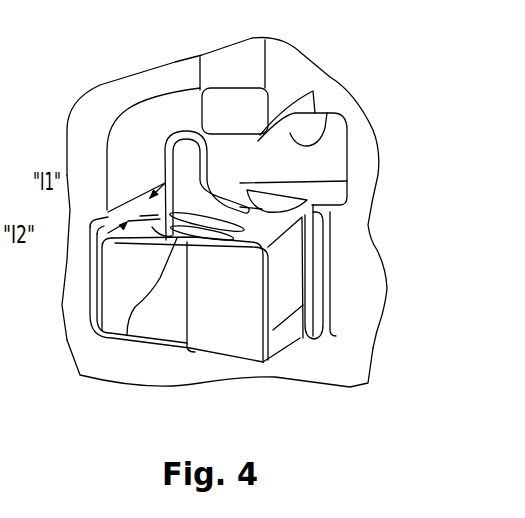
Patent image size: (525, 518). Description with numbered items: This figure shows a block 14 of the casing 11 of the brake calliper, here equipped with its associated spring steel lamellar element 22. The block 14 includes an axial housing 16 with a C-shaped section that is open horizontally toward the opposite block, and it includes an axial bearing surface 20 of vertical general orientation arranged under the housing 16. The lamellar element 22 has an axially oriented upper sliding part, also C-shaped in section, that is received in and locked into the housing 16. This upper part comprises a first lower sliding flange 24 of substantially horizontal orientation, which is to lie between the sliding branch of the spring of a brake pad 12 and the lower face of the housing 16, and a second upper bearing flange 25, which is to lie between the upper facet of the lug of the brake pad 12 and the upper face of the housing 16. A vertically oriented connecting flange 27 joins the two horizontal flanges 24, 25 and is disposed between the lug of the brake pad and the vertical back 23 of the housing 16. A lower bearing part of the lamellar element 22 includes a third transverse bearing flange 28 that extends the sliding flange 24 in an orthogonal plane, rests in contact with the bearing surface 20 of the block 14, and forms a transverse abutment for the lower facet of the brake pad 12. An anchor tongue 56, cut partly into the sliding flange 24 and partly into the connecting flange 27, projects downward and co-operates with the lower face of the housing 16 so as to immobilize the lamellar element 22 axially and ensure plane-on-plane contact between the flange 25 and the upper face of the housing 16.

The casing 11 is at (342, 396).
The brake pad 12 is at (8, 103).
The block 14 is at (238, 245).
The axial housing 16 is at (112, 232).
The axial bearing surface 20 is at (292, 400).
The lamellar element 22 is at (187, 128).
The vertical back 23 is at (123, 147).
The first lower sliding flange 24 is at (252, 333).
The second upper bearing flange 25 is at (325, 128).
The connecting flange 27 is at (160, 168).
The third transverse bearing flange 28 is at (287, 292).
The anchor tongue 56 is at (127, 335).